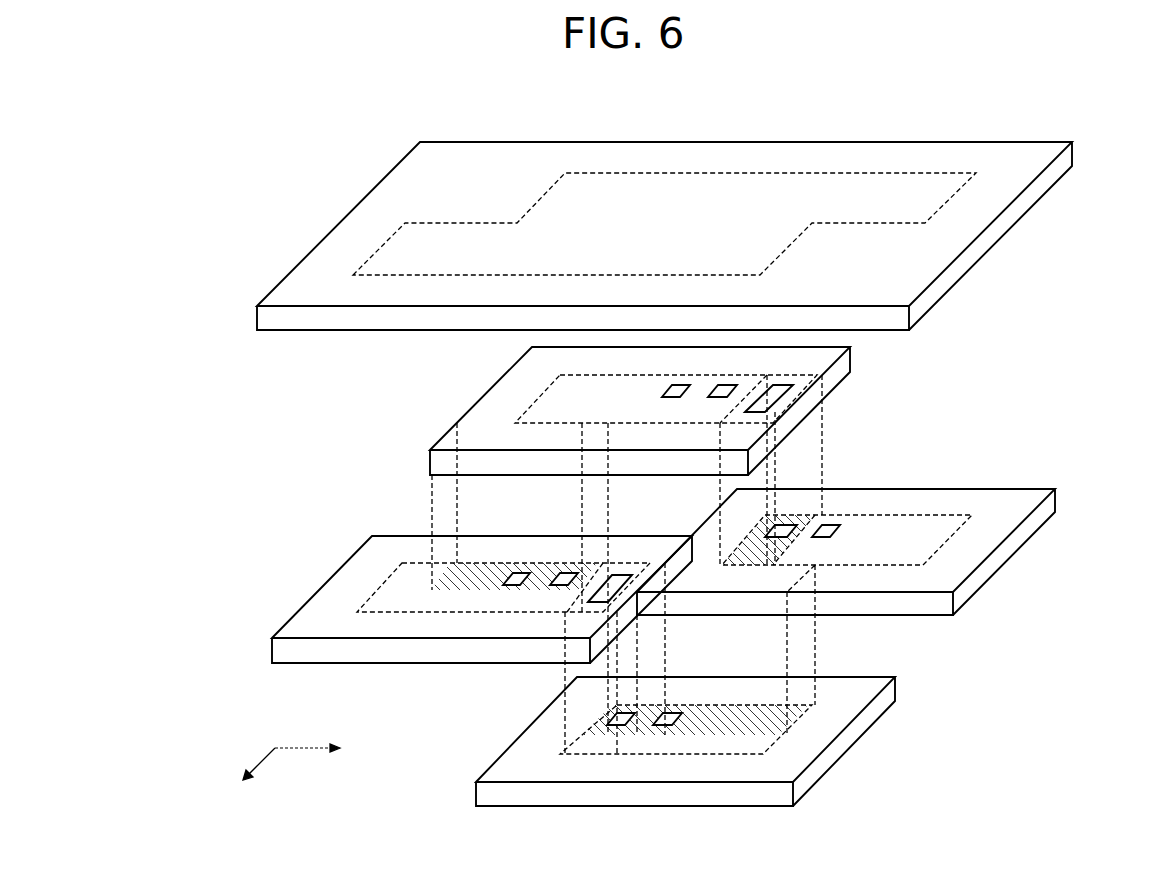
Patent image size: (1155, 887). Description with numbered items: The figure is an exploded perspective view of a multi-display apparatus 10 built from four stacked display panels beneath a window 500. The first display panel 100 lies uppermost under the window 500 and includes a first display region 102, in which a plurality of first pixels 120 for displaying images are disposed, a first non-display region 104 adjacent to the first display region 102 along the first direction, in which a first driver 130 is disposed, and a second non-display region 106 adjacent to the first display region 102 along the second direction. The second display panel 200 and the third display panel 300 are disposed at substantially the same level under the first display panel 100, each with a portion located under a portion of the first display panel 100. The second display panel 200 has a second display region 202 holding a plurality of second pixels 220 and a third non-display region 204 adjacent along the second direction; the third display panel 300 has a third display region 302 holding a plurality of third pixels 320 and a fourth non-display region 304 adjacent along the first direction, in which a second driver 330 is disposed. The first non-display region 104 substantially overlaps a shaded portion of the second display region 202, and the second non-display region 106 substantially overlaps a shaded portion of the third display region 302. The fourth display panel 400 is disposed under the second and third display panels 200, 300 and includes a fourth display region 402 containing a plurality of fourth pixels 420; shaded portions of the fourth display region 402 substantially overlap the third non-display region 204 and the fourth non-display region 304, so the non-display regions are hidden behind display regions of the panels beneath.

The multi-display apparatus 10 is at (1018, 108).
The window 500 is at (1075, 153).
The first display panel 100 is at (430, 461).
The first display region 102 is at (537, 400).
The first non-display region 104 is at (792, 407).
The second non-display region 106 is at (465, 432).
The first pixels 120 is at (662, 389).
The first driver 130 is at (793, 387).
The second display panel 200 is at (1058, 498).
The second display region 202 is at (935, 537).
The third non-display region 204 is at (740, 578).
The second pixels 220 is at (830, 518).
The third display panel 300 is at (268, 647).
The third display region 302 is at (395, 580).
The fourth non-display region 304 is at (586, 604).
The third pixels 320 is at (513, 586).
The second driver 330 is at (605, 568).
The fourth display panel 400 is at (897, 684).
The fourth display region 402 is at (767, 740).
The fourth pixels 420 is at (657, 726).